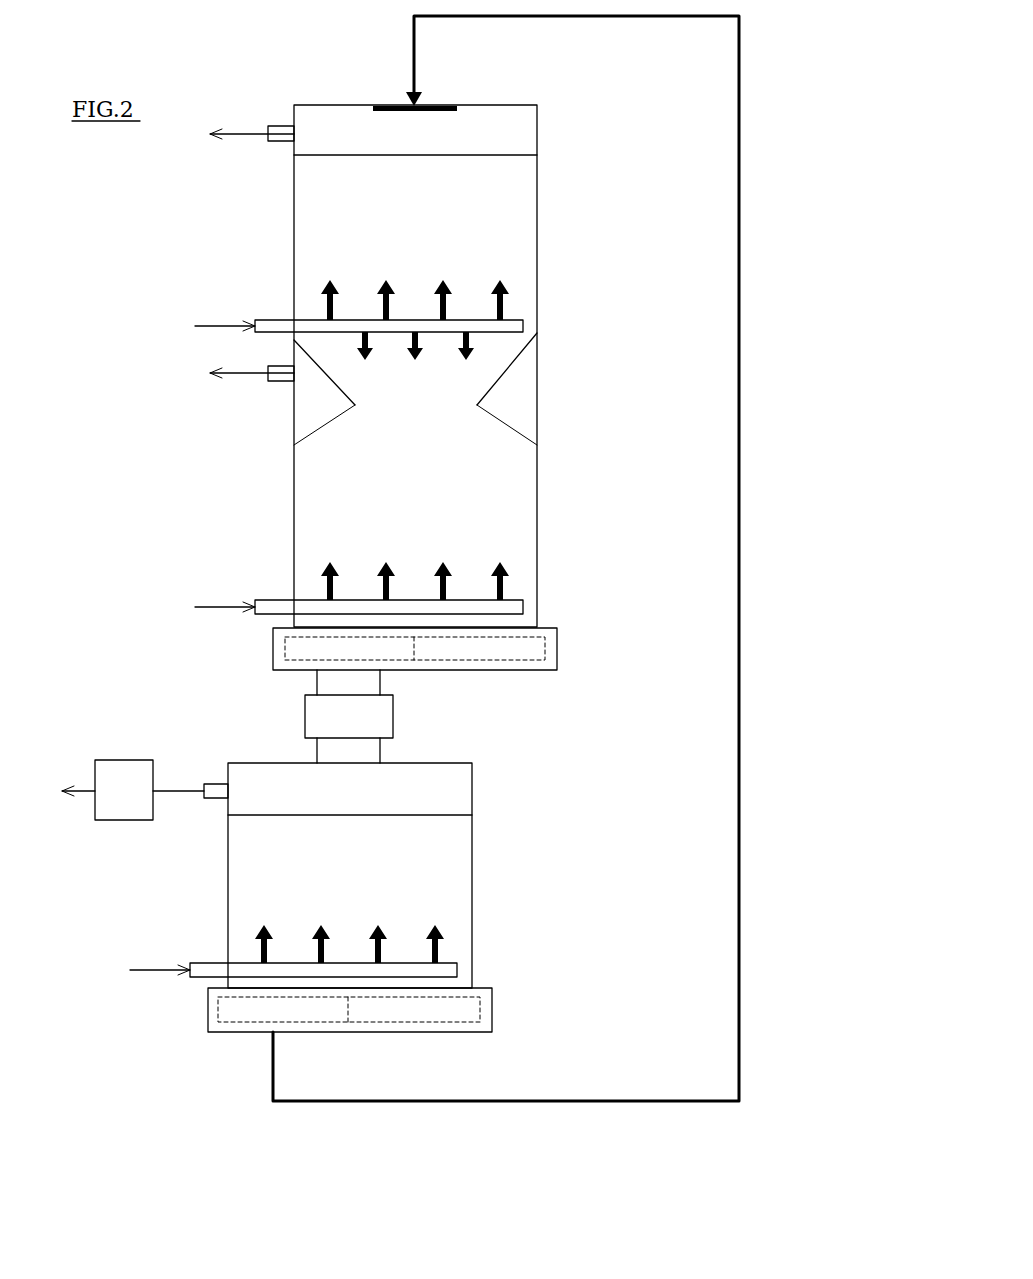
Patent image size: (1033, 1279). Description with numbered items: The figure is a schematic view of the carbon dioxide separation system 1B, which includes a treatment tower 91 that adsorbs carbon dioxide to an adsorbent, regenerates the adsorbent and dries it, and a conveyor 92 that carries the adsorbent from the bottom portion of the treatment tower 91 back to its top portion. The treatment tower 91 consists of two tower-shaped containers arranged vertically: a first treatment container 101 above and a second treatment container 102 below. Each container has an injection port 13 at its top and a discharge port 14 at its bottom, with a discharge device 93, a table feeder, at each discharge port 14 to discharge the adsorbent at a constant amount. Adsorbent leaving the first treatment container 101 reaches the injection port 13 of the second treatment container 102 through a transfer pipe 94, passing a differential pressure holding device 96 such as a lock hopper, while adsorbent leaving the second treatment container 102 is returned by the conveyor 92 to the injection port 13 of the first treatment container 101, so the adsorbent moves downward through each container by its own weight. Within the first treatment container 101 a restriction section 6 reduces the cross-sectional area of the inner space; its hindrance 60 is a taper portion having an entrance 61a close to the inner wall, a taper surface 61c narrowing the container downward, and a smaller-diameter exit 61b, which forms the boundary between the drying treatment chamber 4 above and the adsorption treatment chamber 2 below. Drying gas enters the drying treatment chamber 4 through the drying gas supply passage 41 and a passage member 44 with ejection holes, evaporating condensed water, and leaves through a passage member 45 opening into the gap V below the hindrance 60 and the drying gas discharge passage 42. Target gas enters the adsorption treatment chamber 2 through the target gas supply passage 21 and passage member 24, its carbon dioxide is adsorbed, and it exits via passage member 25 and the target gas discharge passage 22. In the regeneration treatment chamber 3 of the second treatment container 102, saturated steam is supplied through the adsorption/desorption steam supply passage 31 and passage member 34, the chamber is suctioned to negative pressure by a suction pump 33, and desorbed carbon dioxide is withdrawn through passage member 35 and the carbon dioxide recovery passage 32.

The carbon dioxide separation system 1B is at (195, 70).
The adsorption treatment chamber 2 is at (423, 480).
The regeneration treatment chamber 3 is at (428, 800).
The drying treatment chamber 4 is at (423, 208).
The restriction section 6 is at (462, 385).
The injection port 13 is at (375, 111).
The discharge port 14 is at (508, 626).
The target gas supply passage 21 is at (225, 600).
The target gas discharge passage 22 is at (243, 378).
The passage member 24 is at (275, 600).
The passage member 25 is at (280, 385).
The adsorption/desorption steam supply passage 31 is at (163, 970).
The carbon dioxide recovery passage 32 is at (192, 790).
The suction pump 33 is at (120, 760).
The passage member 34 is at (222, 963).
The passage member 35 is at (215, 798).
The drying gas supply passage 41 is at (220, 315).
The drying gas discharge passage 42 is at (245, 130).
The passage member 44 is at (290, 320).
The passage member 45 is at (283, 125).
The hindrance 60 is at (477, 405).
The entrance 61a is at (530, 340).
The exit 61b is at (487, 410).
The taper surface 61c is at (516, 355).
The treatment tower 91 is at (620, 195).
The conveyor 92 is at (739, 97).
The discharge device 93 is at (557, 648).
The transfer pipe 94 is at (383, 685).
The differential pressure holding device 96 is at (305, 703).
The first treatment container 101 is at (537, 155).
The second treatment container 102 is at (472, 815).
The gap V is at (313, 404).